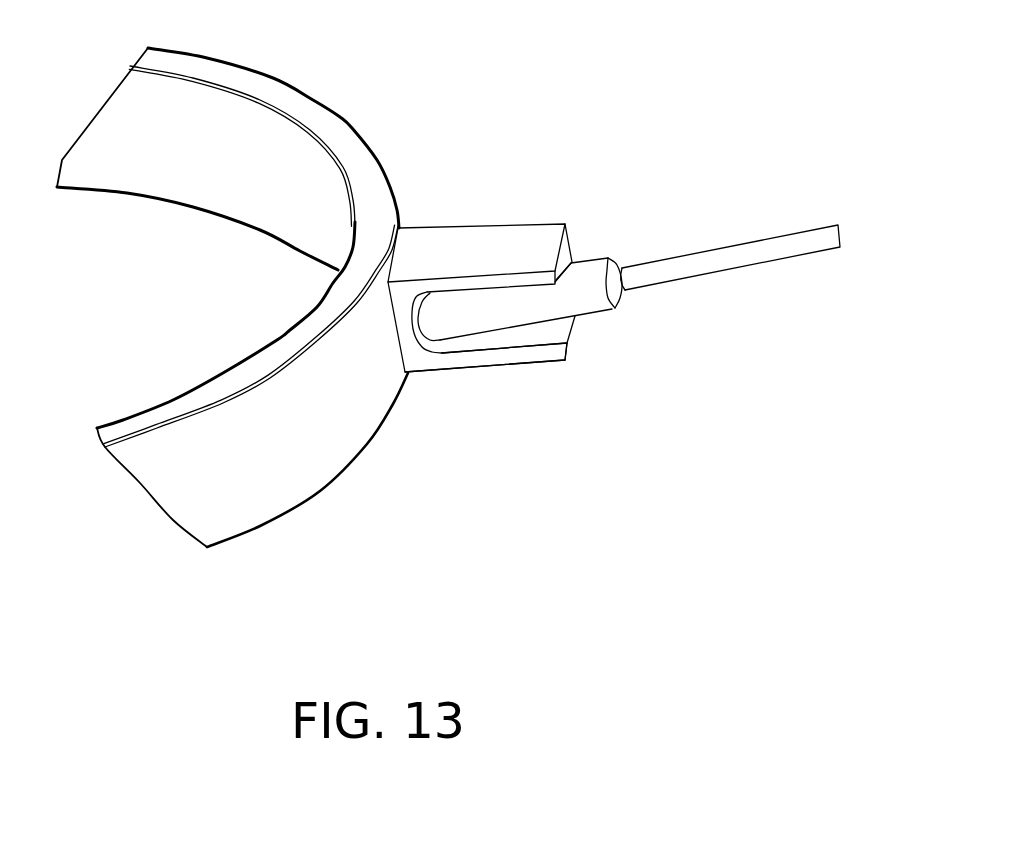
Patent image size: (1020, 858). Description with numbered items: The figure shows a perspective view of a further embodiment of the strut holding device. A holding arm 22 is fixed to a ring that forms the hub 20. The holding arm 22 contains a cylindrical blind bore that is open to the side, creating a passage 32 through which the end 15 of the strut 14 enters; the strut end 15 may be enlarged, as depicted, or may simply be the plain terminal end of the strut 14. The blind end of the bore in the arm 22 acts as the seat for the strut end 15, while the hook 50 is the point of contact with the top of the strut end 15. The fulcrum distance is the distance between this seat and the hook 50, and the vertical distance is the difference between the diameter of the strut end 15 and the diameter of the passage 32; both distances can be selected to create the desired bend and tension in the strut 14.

The hub 20 is at (290, 97).
The holding arm 22 is at (487, 249).
The passage 32 is at (536, 337).
The end of the strut 15 is at (577, 307).
The hook 50 is at (566, 261).
The strut 14 is at (683, 268).